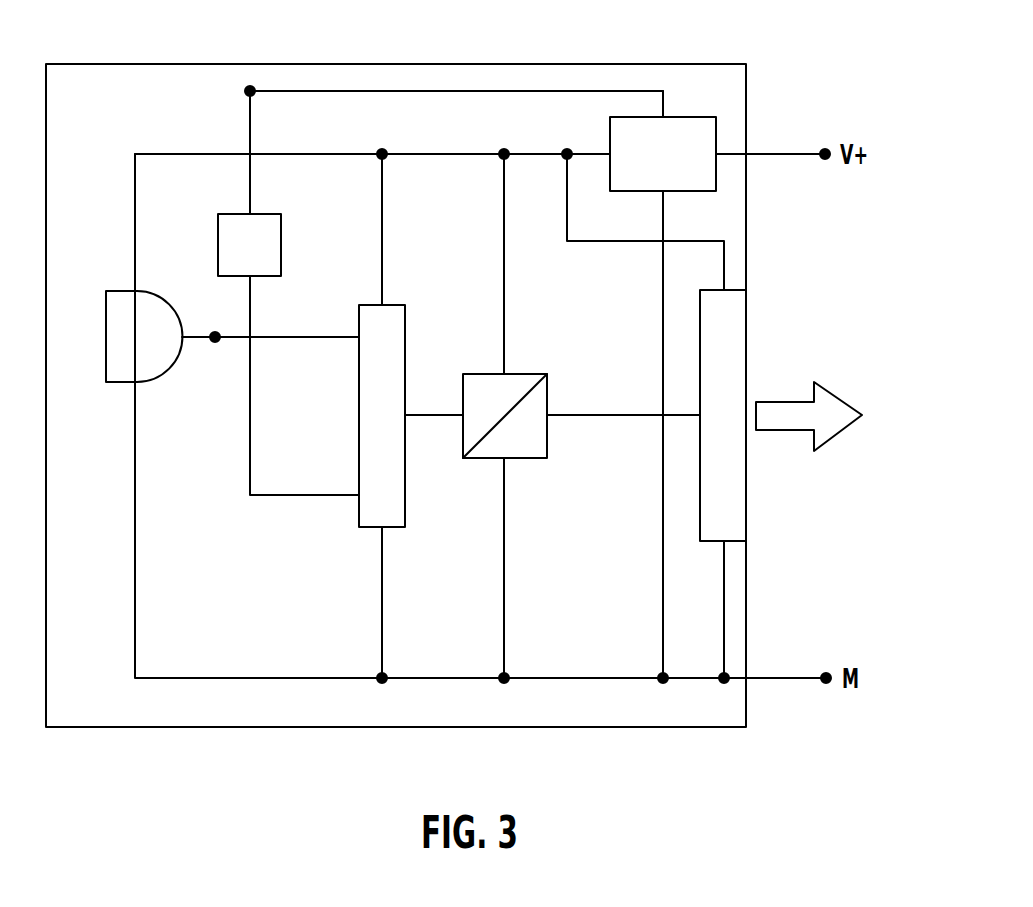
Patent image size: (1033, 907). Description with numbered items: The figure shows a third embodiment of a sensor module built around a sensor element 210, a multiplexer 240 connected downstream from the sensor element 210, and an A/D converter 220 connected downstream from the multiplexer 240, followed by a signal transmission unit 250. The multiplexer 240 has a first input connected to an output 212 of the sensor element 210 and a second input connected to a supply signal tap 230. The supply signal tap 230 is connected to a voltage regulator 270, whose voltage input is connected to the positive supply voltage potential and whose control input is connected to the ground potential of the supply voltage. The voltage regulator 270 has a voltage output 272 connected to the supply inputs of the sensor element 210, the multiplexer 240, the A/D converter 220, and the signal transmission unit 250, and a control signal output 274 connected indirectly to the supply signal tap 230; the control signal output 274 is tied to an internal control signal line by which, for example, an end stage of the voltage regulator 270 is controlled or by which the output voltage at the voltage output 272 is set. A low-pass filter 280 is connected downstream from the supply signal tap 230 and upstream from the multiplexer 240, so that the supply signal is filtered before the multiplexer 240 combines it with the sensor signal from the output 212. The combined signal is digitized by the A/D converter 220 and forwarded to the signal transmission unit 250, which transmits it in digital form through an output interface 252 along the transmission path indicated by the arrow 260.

The sensor element 210 is at (105, 353).
The output of sensor element 212 is at (215, 343).
The A/D converter 220 is at (485, 374).
The supply signal tap 230 is at (246, 91).
The multiplexer 240 is at (359, 415).
The signal transmission unit 250 is at (700, 487).
The output interface 252 is at (746, 360).
The arrow 260 is at (790, 431).
The voltage regulator 270 is at (716, 175).
The voltage output 272 is at (610, 150).
The control signal output 274 is at (663, 116).
The low-pass filter 280 is at (218, 241).